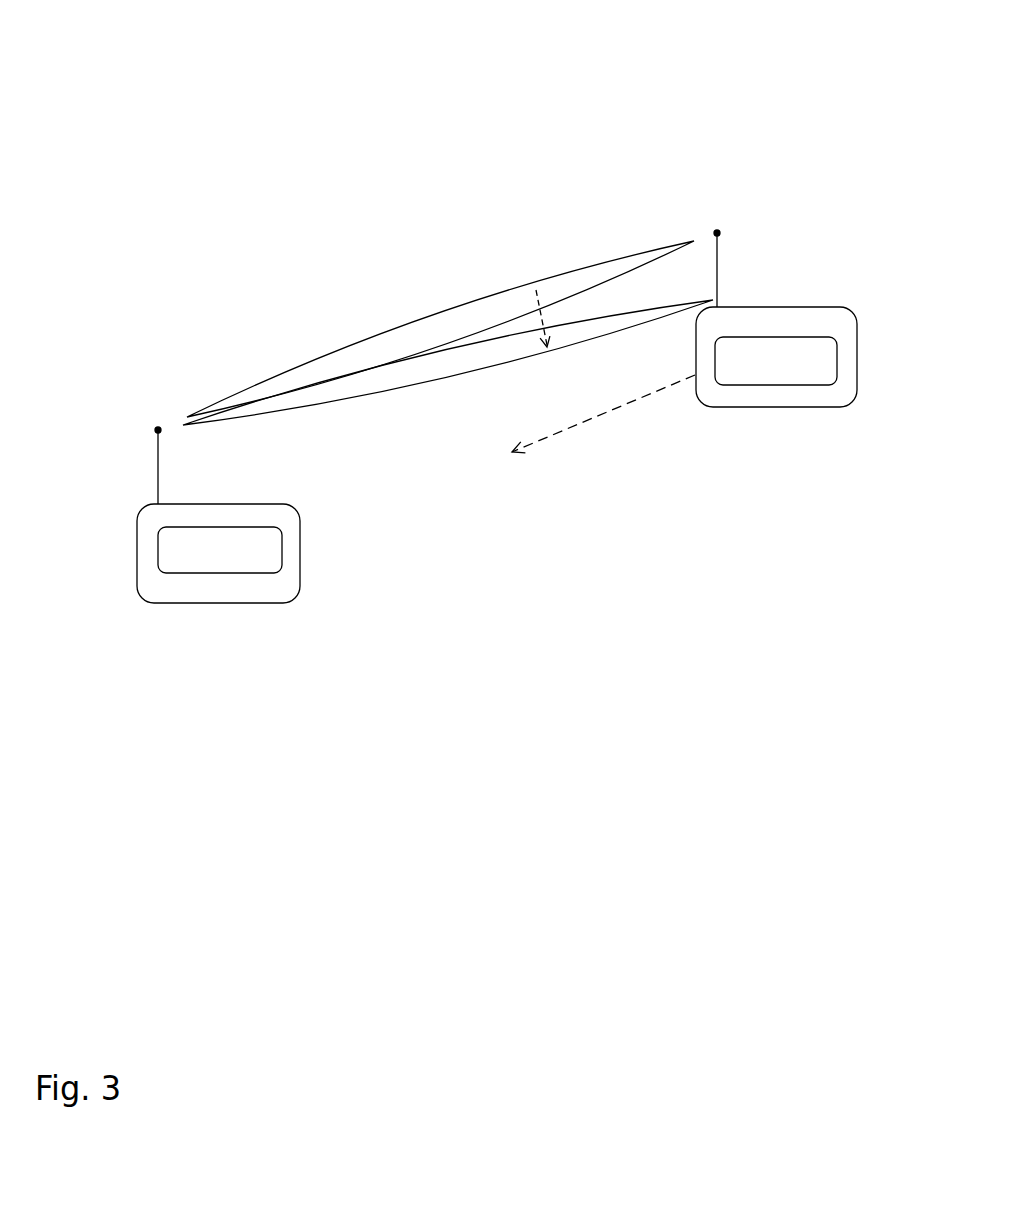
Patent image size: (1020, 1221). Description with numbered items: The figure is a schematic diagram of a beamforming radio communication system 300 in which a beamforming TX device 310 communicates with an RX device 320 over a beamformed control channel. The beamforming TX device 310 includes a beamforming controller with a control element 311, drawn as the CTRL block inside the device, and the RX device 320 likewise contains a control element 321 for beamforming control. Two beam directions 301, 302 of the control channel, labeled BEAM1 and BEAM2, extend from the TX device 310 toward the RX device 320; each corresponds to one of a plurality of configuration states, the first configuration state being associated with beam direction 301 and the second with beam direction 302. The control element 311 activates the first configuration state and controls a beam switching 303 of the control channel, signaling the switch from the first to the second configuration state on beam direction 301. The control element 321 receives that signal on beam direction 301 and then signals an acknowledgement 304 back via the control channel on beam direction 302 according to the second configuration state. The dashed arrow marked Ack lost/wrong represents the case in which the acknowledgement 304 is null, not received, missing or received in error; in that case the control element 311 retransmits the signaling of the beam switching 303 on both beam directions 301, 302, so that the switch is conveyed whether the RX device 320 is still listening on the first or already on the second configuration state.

The beamforming radio communication system 300 is at (310, 90).
The beam direction 301 is at (432, 305).
The beam direction 302 is at (447, 392).
The beam switching 303 is at (535, 325).
The acknowledgement 304 is at (602, 470).
The beamforming TX device 310 is at (211, 608).
The control element 311 is at (263, 550).
The RX device 320 is at (773, 412).
The control element 321 is at (820, 355).